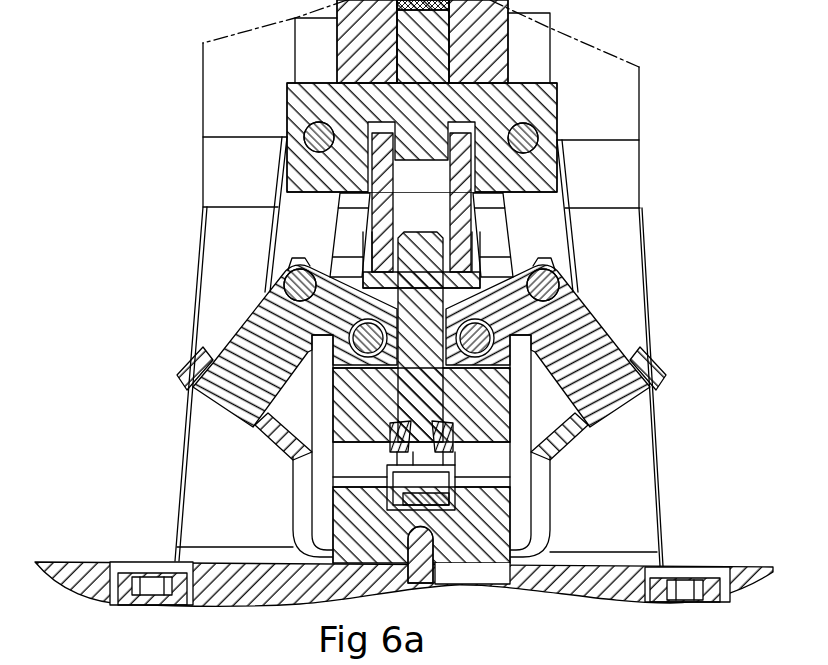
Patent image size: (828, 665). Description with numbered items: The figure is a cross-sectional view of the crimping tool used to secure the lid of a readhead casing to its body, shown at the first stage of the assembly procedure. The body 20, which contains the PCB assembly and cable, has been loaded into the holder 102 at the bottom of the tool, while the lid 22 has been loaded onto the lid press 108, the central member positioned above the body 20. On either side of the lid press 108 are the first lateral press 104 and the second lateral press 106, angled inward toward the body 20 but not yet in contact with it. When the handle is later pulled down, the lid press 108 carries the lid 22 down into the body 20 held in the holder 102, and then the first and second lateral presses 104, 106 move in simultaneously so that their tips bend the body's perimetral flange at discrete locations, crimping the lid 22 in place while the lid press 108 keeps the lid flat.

The body 20 is at (387, 478).
The lid 22 is at (390, 457).
The holder 102 is at (387, 490).
The first lateral press 104 is at (243, 333).
The second lateral press 106 is at (597, 323).
The lid press 108 is at (447, 307).